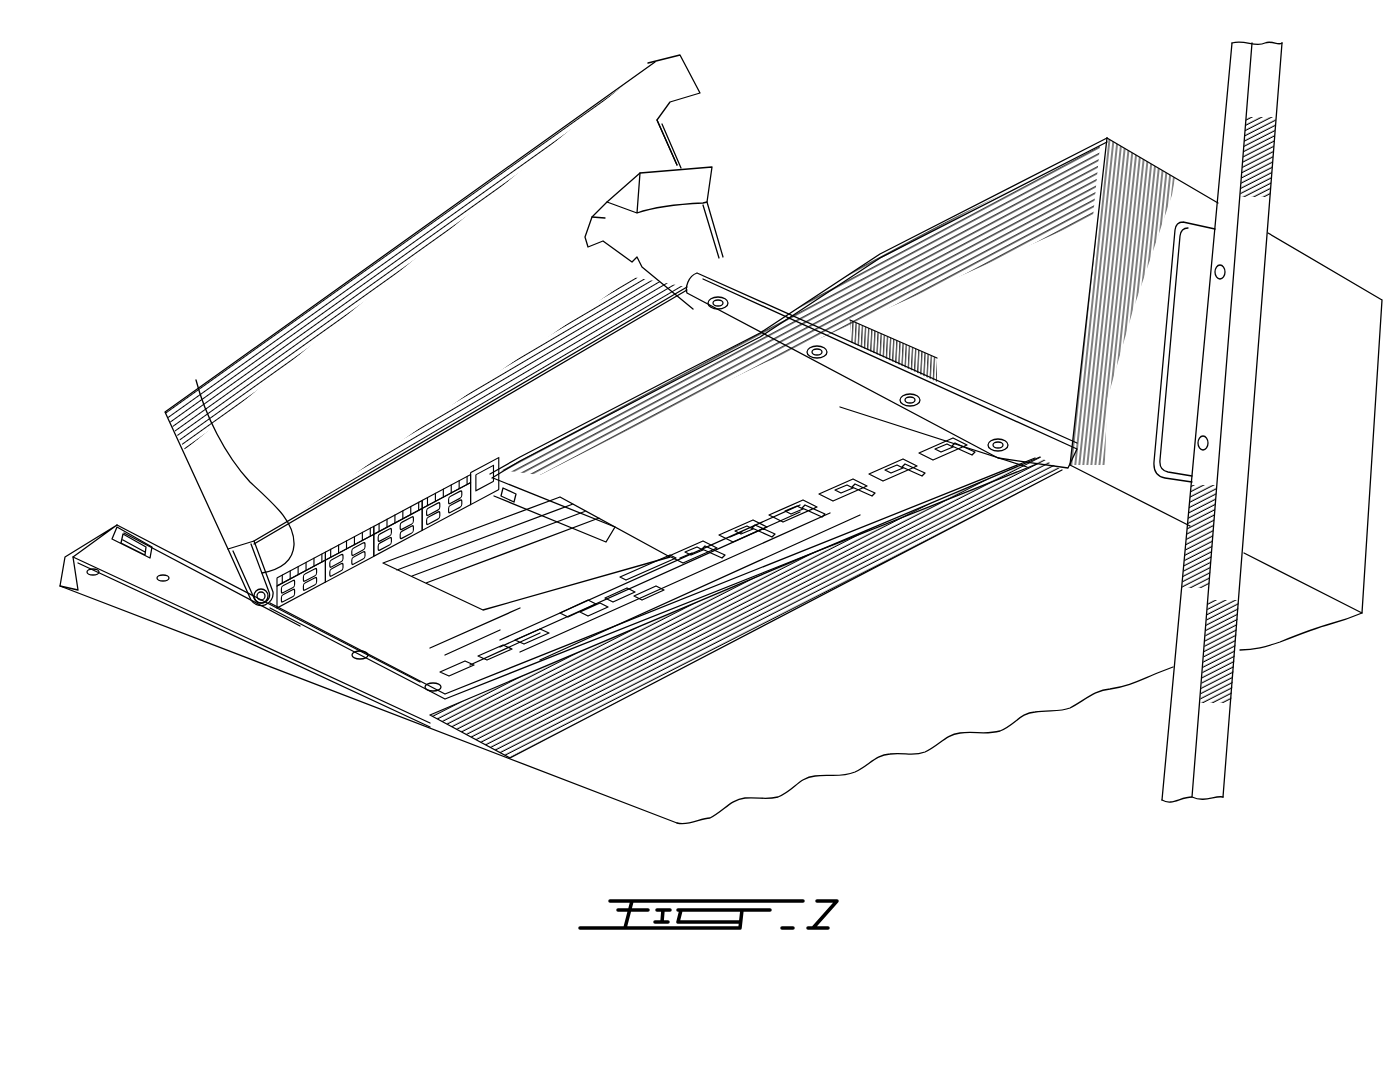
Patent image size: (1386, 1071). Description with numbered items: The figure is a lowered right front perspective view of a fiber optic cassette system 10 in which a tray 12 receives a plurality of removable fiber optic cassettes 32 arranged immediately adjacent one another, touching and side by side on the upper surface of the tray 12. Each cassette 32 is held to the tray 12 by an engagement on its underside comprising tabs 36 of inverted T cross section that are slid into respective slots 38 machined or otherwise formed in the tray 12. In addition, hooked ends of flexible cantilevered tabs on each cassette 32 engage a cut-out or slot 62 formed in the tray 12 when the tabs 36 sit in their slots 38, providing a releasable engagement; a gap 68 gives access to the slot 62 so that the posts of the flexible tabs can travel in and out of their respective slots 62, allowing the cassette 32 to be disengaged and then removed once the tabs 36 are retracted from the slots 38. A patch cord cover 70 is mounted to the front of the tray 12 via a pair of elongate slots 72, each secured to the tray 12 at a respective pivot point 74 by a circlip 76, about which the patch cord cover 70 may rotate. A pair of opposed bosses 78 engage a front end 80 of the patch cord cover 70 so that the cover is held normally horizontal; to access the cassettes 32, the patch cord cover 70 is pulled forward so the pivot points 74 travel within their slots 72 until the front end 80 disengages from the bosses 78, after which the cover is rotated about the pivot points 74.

The network device assembly 10 is at (222, 220).
The tray 12 is at (946, 449).
The fiber optic cassette 32 is at (455, 568).
The tab 36 is at (628, 577).
The slot 38 is at (659, 618).
The cut-out/slot 62 is at (748, 533).
The gap 68 is at (745, 533).
The patch cord cover 70 is at (487, 222).
The elongate slot 72 is at (227, 566).
The pivot point 74 is at (257, 597).
The circlip 76 is at (196, 380).
The boss 78 is at (138, 540).
The front end 80 is at (690, 70).